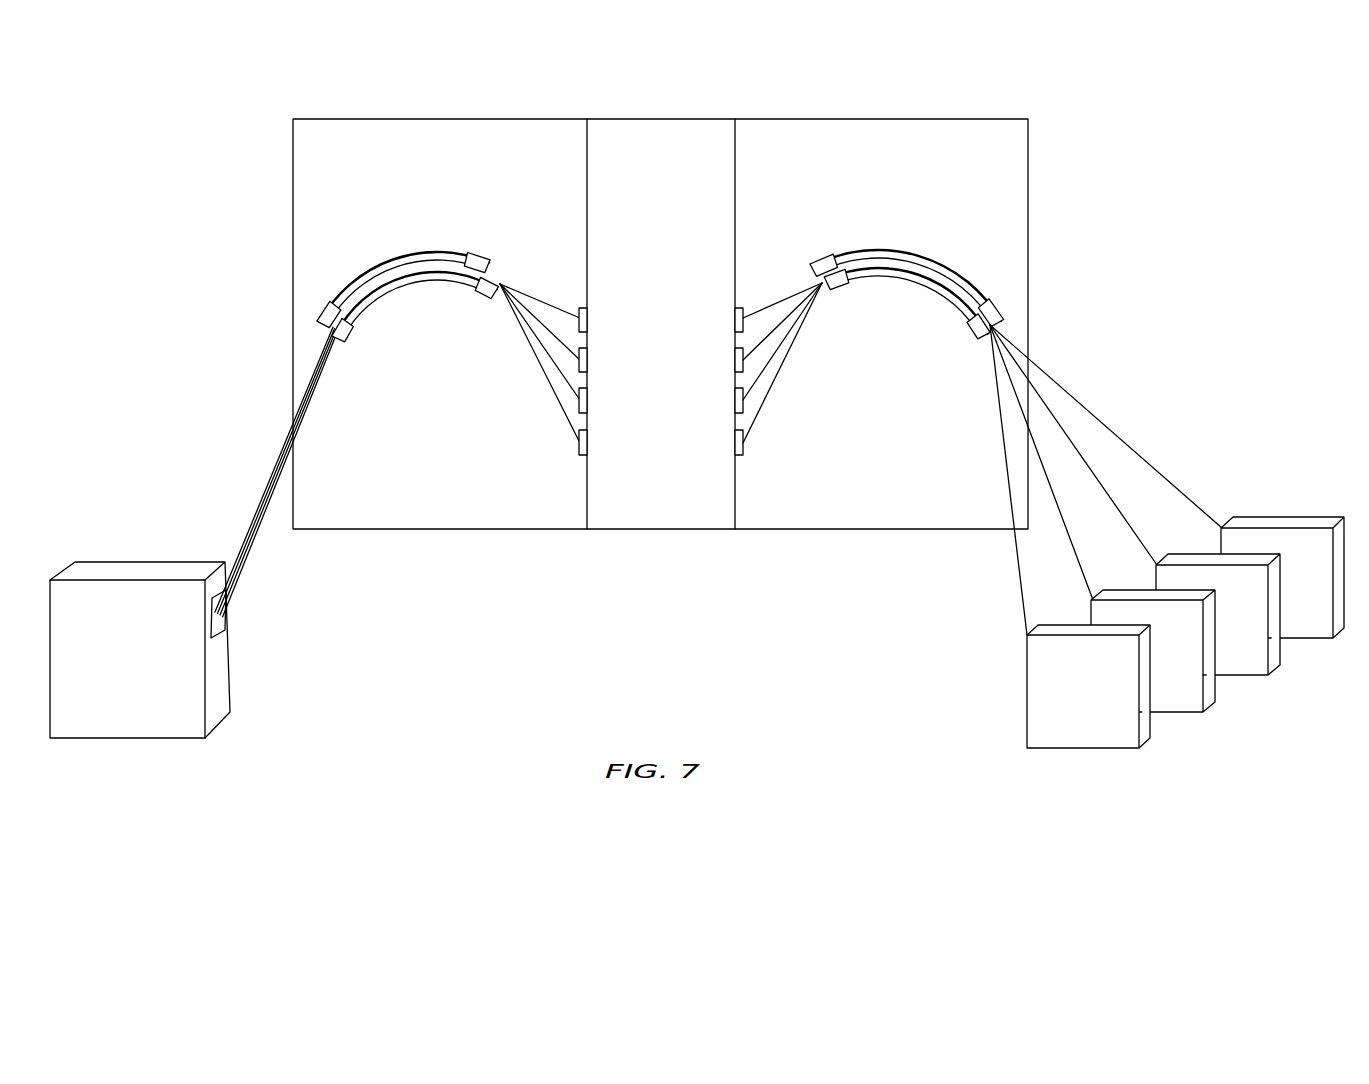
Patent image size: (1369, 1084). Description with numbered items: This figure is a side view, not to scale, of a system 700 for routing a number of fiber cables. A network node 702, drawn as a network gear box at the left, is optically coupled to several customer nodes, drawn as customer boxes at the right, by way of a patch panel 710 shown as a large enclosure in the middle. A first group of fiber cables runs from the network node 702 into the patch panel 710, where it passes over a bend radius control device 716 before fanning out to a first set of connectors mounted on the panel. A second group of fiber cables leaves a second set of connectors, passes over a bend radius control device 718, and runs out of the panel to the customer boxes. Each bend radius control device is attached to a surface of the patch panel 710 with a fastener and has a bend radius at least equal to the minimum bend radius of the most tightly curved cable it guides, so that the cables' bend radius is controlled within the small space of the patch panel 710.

The system 700 is at (1142, 155).
The network node 702 is at (147, 562).
The patch panel 710 is at (667, 118).
The bend radius control device 716 is at (402, 254).
The bend radius control device 718 is at (918, 250).